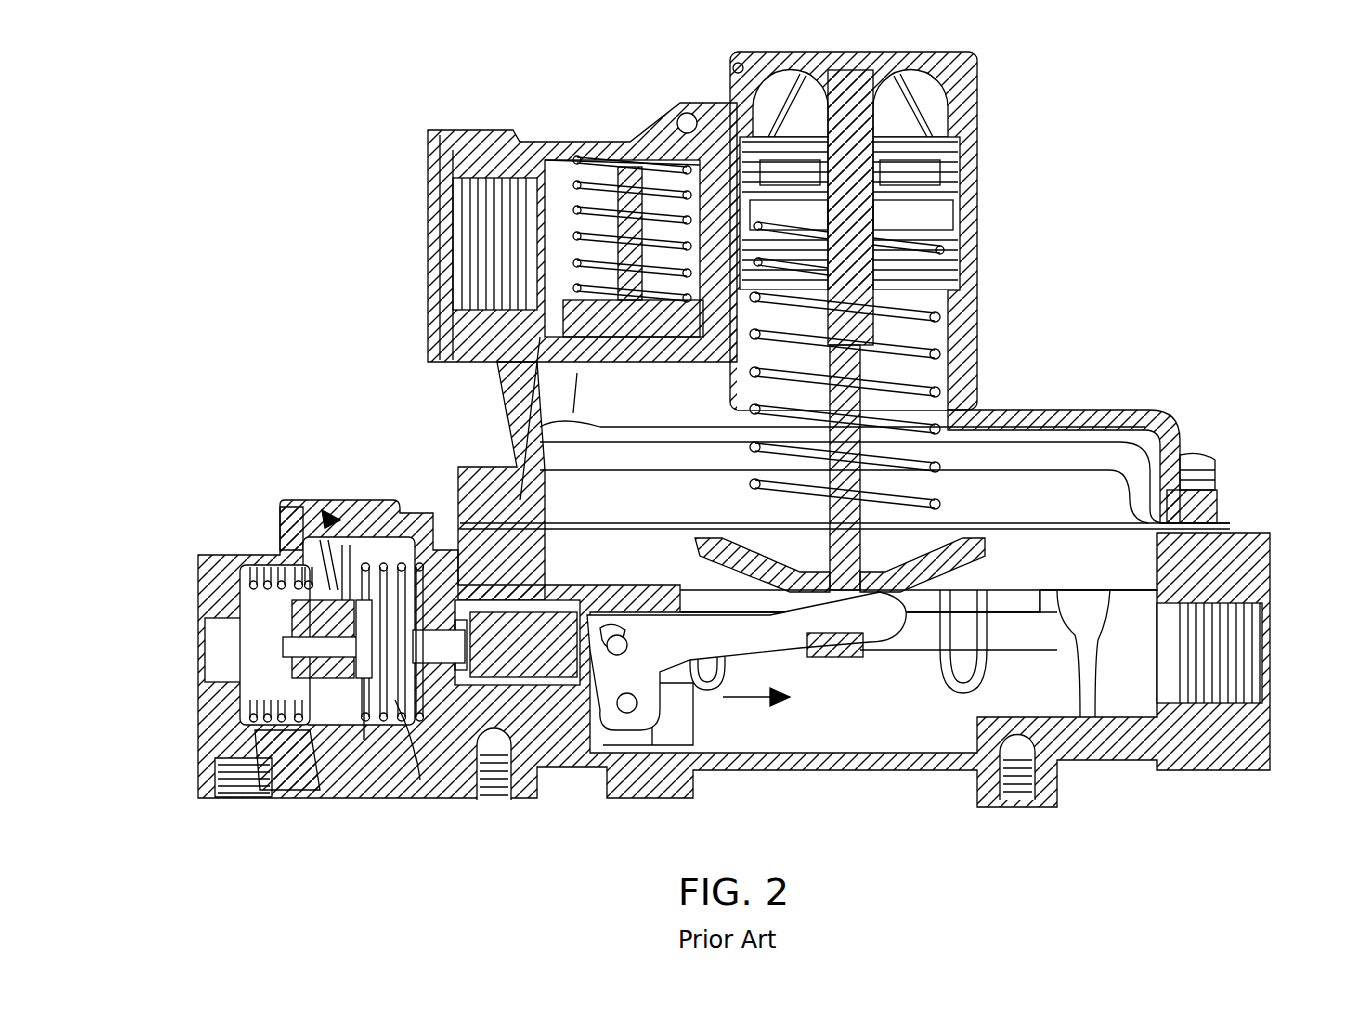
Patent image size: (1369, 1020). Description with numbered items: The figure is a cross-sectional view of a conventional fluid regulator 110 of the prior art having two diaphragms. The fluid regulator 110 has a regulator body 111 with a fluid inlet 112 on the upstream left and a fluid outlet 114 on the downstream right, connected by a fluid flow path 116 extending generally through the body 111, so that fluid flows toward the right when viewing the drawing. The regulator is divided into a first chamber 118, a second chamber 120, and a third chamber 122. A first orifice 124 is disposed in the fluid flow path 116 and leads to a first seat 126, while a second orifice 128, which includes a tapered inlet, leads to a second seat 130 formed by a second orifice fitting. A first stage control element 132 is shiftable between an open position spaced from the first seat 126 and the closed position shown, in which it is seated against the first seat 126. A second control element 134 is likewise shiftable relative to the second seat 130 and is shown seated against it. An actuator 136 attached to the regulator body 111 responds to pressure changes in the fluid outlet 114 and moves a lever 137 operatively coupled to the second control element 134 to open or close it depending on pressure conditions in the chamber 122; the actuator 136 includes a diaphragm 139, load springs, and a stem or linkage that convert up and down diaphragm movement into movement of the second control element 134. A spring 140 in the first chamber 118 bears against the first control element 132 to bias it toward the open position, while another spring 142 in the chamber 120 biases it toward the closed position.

The fluid regulator 110 is at (737, 464).
The regulator body 111 is at (418, 512).
The fluid inlet 112 is at (200, 665).
The fluid outlet 114 is at (1268, 652).
The fluid flow path 116 is at (760, 700).
The first chamber 118 is at (262, 572).
The second chamber 120 is at (372, 548).
The third chamber 122 is at (737, 654).
The first orifice 124 is at (330, 560).
The first seat 126 is at (348, 600).
The second orifice 128 is at (448, 760).
The second seat 130 is at (505, 780).
The first stage control element 132 is at (395, 735).
The second control element 134 is at (545, 670).
The actuator 136 is at (1045, 320).
The lever 137 is at (798, 620).
The diaphragm 139 is at (1065, 523).
The spring 140 is at (285, 775).
The spring 142 is at (425, 775).